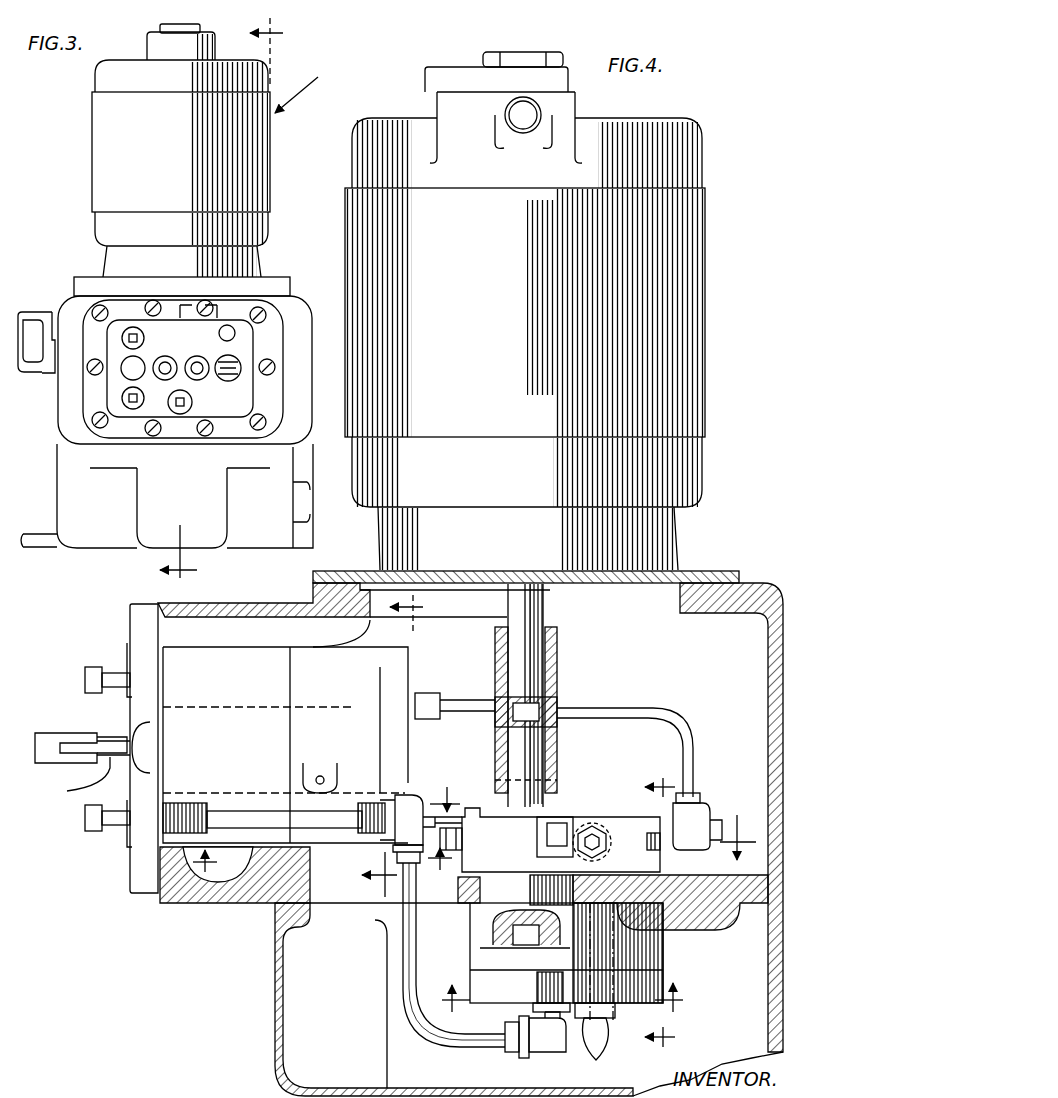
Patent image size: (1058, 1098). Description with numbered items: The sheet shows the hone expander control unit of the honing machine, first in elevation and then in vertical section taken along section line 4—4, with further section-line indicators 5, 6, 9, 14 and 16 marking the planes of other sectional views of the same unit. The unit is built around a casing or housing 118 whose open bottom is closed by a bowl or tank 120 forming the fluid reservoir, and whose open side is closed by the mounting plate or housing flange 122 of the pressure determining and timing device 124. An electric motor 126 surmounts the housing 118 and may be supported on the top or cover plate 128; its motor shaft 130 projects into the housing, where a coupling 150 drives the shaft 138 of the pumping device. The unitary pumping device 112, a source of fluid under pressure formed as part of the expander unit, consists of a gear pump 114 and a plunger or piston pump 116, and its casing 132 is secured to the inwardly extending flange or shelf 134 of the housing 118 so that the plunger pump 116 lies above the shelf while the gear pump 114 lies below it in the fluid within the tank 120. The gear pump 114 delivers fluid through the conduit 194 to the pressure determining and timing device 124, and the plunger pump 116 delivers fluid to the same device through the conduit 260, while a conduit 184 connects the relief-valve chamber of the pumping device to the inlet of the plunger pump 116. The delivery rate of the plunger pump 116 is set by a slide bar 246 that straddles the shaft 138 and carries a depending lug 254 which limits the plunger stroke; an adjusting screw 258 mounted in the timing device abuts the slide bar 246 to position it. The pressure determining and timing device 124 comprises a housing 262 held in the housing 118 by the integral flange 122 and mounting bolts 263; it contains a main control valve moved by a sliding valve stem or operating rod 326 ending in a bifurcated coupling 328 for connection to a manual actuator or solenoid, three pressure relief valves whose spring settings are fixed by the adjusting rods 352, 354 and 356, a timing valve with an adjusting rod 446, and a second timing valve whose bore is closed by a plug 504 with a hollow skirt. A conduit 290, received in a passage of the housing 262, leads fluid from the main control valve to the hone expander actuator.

In FIG. 3, the section line 4— 4 is at (231, 302).
In FIG. 4, the section line 5— 5 is at (566, 999).
In FIG. 3, the section line 6— 6 is at (304, 82).
In FIG. 4, the section line 6— 6 is at (661, 910).
In FIG. 4, the section line 9— 9 is at (593, 812).
In FIG. 4, the section line 14— 14 is at (408, 748).
In FIG. 4, the section line 16— 16 is at (323, 875).
In FIG. 4, the unitary pumping device 112 is at (585, 803).
In FIG. 4, the gear pump 114 is at (478, 963).
In FIG. 4, the plunger or piston pump 116 is at (488, 830).
In FIG. 4, the casing or housing 118 is at (758, 585).
In FIG. 3, the bowl or tank 120 is at (93, 540).
In FIG. 4, the bowl or tank 120 is at (272, 1023).
In FIG. 3, the mounting plate or housing flange 122 is at (208, 416).
In FIG. 4, the mounting plate or housing flange 122 is at (128, 858).
In FIG. 4, the pressure determining and timing device 124 is at (402, 644).
In FIG. 3, the electric motor 126 is at (105, 167).
In FIG. 4, the electric motor 126 is at (686, 306).
In FIG. 4, the top or cover plate 128 is at (652, 575).
In FIG. 4, the motor shaft 130 is at (526, 653).
In FIG. 4, the casing of the pumping device 132 is at (500, 903).
In FIG. 4, the inwardly extending flange or shelf 134 is at (690, 890).
In FIG. 4, the shaft 138 is at (530, 739).
In FIG. 4, the coupling 150 is at (557, 671).
In FIG. 4, the conduit 184 is at (660, 955).
In FIG. 4, the conduit 194 is at (437, 1040).
In FIG. 4, the slide bar 246 is at (447, 821).
In FIG. 4, the depending lug 254 is at (548, 818).
In FIG. 3, the adjusting screw 258 is at (181, 413).
In FIG. 4, the adjusting screw 258 is at (238, 808).
In FIG. 4, the conduit 260 is at (641, 705).
In FIG. 4, the housing 262 is at (233, 672).
In FIG. 3, the mounting bolts 263 is at (271, 362).
In FIG. 3, the conduit 290 is at (230, 327).
In FIG. 4, the sliding valve stem or operating rod 326 is at (73, 786).
In FIG. 3, the bifurcated coupling 328 is at (233, 372).
In FIG. 4, the bifurcated coupling 328 is at (70, 728).
In FIG. 3, the adjusting rod or stem 352 is at (205, 348).
In FIG. 3, the adjusting rod or stem 354 is at (127, 336).
In FIG. 3, the adjusting rod or stem 356 is at (133, 407).
In FIG. 3, the adjusting rod or stem 446 is at (170, 373).
In FIG. 3, the plug 504 is at (126, 370).